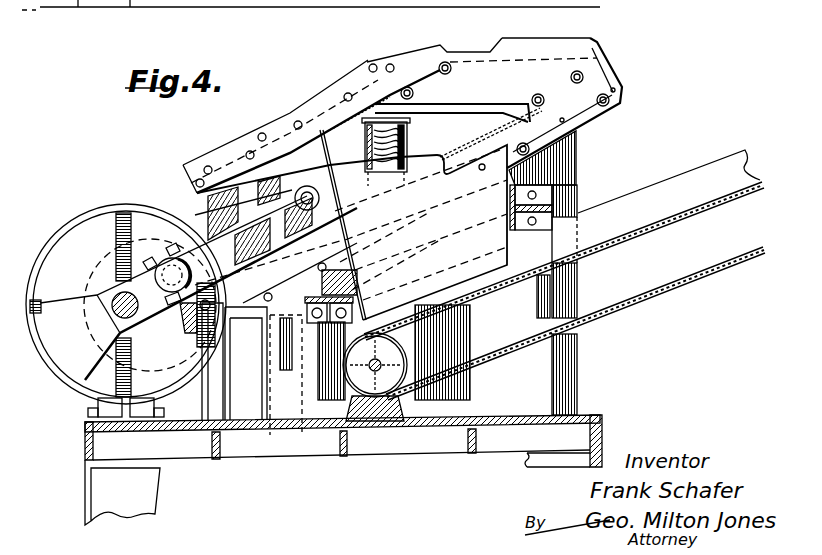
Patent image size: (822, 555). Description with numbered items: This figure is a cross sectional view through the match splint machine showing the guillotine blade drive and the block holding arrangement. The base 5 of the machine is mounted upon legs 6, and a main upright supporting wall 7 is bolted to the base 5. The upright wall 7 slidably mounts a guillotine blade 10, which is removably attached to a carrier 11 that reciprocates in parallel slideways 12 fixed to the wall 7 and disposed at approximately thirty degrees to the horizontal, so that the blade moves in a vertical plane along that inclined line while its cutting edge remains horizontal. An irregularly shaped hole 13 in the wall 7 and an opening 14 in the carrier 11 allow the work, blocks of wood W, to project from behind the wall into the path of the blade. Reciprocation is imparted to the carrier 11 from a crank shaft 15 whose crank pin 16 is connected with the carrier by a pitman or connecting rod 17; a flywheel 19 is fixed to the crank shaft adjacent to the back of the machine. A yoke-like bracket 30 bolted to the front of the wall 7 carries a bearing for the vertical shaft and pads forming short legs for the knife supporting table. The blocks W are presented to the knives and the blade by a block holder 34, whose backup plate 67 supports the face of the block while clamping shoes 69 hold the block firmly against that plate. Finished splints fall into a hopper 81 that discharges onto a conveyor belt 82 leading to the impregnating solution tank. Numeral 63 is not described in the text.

The base 5 is at (602, 430).
The legs 6 is at (79, 504).
The main upright supporting wall 7 is at (577, 162).
The guillotine blade 10 is at (590, 37).
The carrier 11 is at (467, 52).
The slideways 12 is at (403, 62).
The irregularly shaped hole 13 is at (323, 107).
The opening 14 is at (287, 127).
The crank shaft 15 is at (110, 295).
The crank pin 16 is at (152, 315).
The pitman or connecting rod 17 is at (207, 228).
The flywheel 19 is at (112, 208).
The yoke-like bracket 30 is at (542, 197).
The block holder 34 is at (410, 129).
The wheel rim 63 is at (51, 247).
The backup plate 67 is at (370, 142).
The clamping shoes 69 is at (402, 146).
The hopper 81 is at (443, 270).
The conveyor belt 82 is at (700, 182).
The blocks of wood W is at (372, 128).